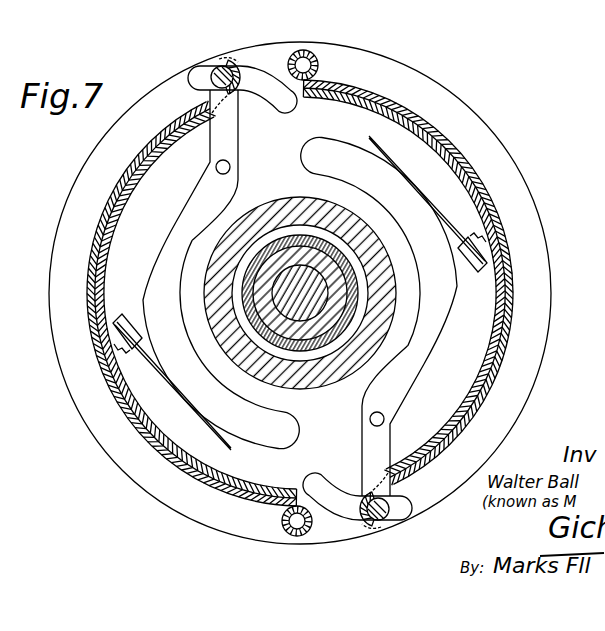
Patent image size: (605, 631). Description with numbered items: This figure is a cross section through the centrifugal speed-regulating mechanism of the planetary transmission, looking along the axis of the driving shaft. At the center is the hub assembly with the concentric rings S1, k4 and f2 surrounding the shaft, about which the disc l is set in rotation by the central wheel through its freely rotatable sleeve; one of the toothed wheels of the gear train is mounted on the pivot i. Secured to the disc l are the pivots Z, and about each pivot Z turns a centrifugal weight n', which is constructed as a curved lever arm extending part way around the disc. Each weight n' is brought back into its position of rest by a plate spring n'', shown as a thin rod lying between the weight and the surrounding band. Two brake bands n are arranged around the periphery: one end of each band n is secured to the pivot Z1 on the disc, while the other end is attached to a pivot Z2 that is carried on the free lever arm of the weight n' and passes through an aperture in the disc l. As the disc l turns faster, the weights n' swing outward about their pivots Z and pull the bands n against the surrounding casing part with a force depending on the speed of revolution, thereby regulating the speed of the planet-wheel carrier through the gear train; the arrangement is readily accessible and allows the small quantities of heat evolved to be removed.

The disc l is at (490, 142).
The pivot i is at (136, 222).
The brake band n is at (299, 293).
The centrifugal weight n' is at (300, 292).
The plate spring n'' is at (300, 295).
The pivot Z is at (233, 167).
The pivot Z1 is at (316, 65).
The pivot Z2 is at (213, 72).
The hub sleeve S1 is at (249, 212).
The bearing ring k4 is at (309, 347).
The shaft collar f2 is at (335, 313).